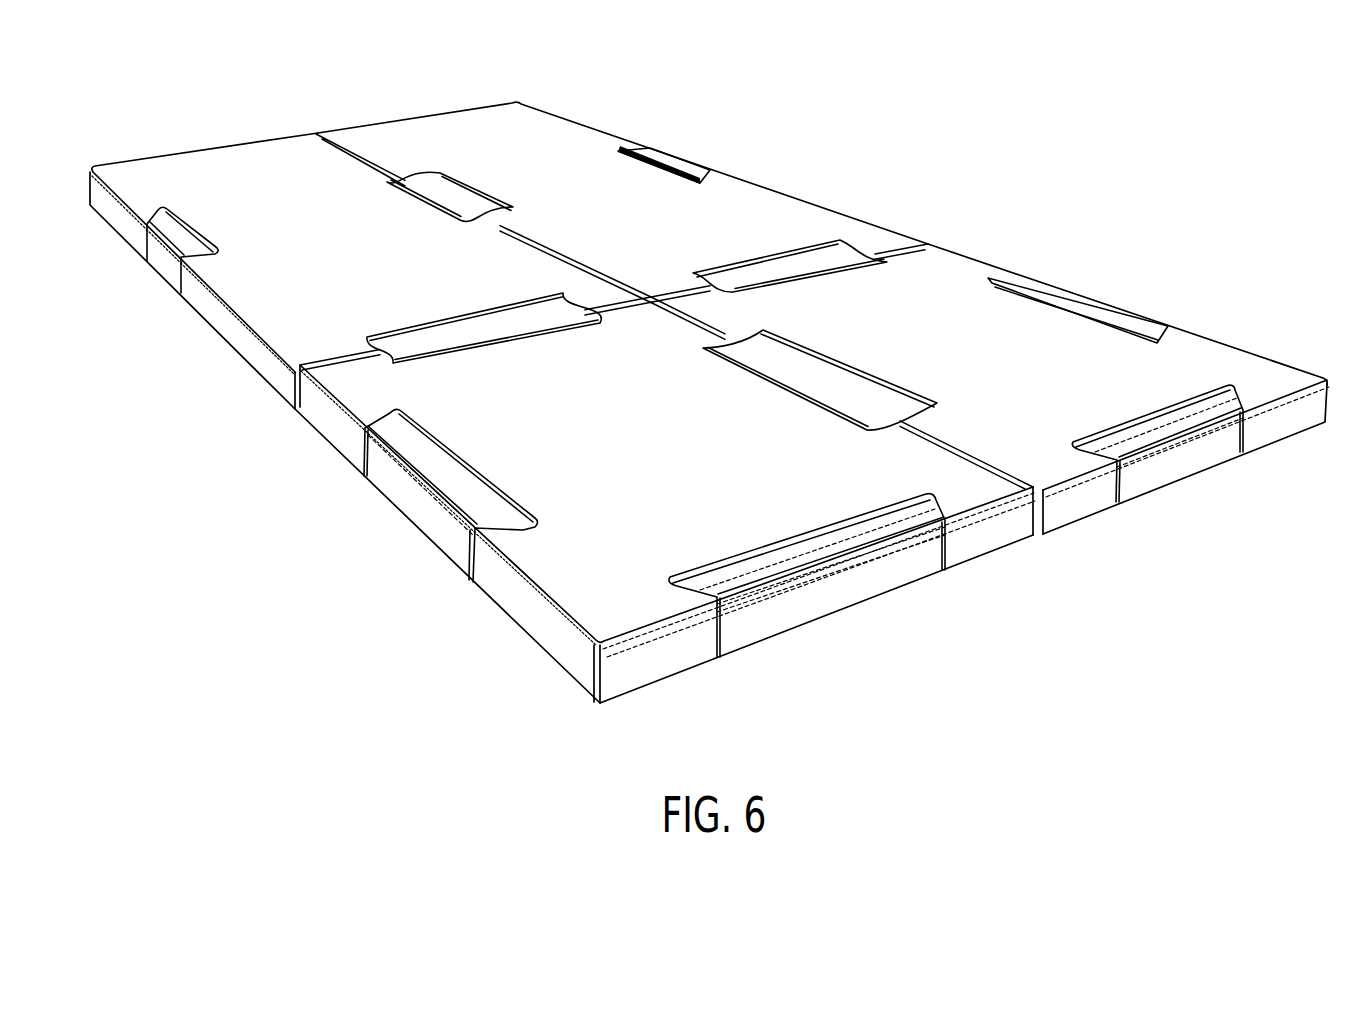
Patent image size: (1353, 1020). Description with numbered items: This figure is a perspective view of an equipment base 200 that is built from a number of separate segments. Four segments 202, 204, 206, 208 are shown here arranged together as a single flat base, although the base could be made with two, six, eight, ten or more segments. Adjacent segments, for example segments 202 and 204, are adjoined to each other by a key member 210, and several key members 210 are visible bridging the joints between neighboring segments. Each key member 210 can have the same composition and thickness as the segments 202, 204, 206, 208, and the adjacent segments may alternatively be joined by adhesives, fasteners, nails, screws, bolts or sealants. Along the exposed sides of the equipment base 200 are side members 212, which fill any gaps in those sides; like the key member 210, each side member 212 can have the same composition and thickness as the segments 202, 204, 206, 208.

The equipment base 200 is at (925, 163).
The segment 202 is at (246, 172).
The segment 204 is at (455, 133).
The segment 206 is at (943, 307).
The segment 208 is at (592, 552).
The key member 210 is at (473, 200).
The side member 212 is at (673, 163).